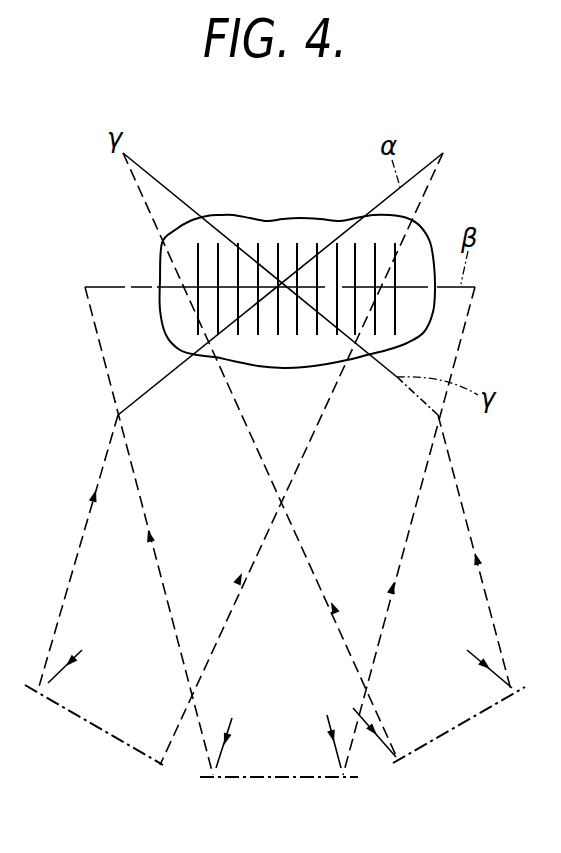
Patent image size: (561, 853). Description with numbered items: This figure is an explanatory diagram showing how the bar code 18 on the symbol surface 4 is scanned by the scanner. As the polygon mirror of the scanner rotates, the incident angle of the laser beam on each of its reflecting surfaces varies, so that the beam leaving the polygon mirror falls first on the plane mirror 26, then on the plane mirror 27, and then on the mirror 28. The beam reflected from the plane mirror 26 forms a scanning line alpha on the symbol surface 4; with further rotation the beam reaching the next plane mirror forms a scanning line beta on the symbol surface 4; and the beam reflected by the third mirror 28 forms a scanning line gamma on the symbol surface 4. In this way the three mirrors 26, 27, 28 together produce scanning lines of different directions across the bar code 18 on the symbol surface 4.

The symbol surface 4 is at (301, 215).
The bar code 18 is at (186, 256).
The plane mirror 26 is at (80, 722).
The plane mirror 27 is at (282, 780).
The mirror 28 is at (463, 722).